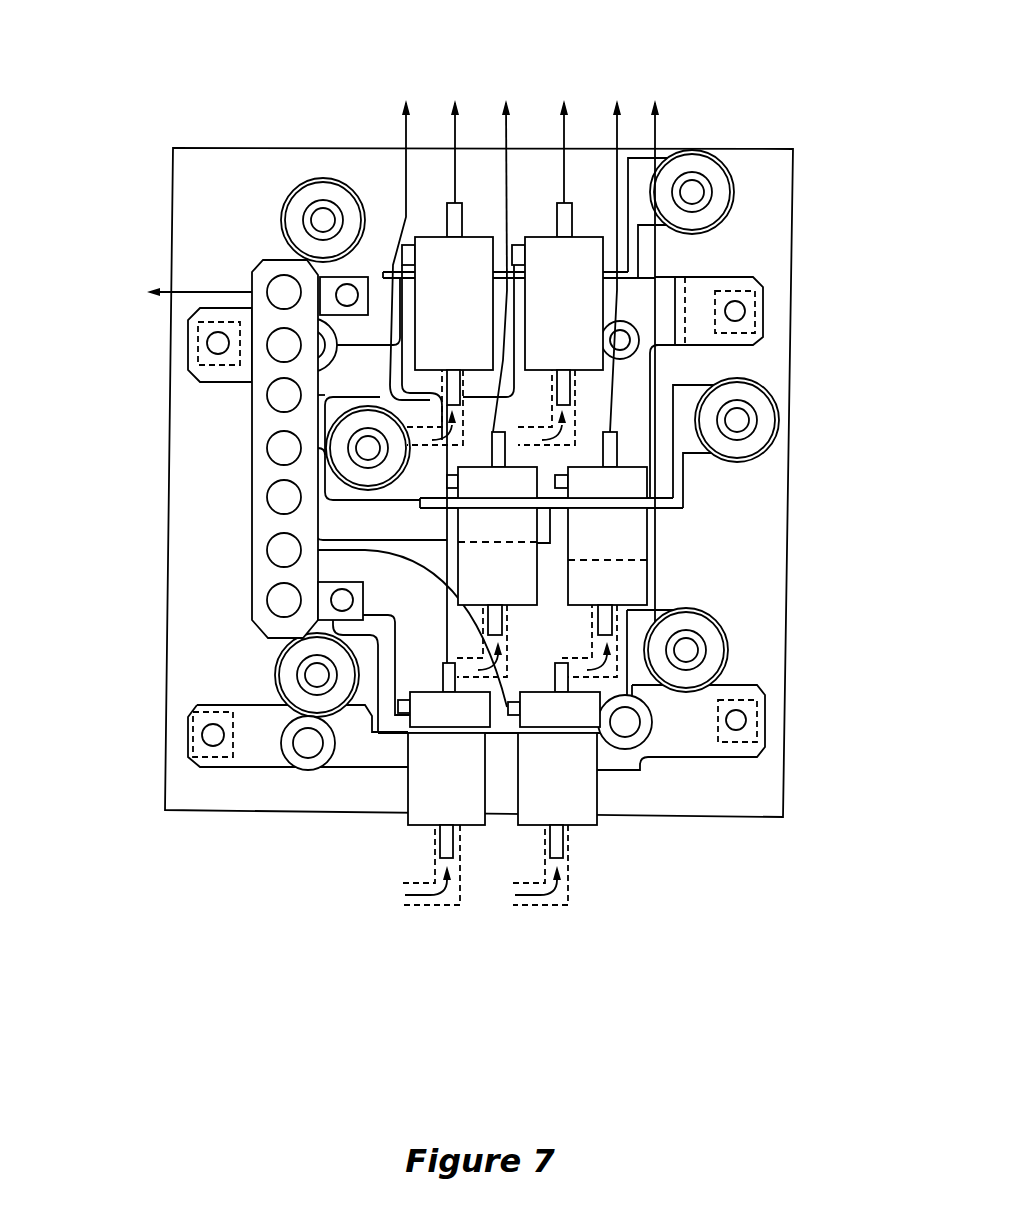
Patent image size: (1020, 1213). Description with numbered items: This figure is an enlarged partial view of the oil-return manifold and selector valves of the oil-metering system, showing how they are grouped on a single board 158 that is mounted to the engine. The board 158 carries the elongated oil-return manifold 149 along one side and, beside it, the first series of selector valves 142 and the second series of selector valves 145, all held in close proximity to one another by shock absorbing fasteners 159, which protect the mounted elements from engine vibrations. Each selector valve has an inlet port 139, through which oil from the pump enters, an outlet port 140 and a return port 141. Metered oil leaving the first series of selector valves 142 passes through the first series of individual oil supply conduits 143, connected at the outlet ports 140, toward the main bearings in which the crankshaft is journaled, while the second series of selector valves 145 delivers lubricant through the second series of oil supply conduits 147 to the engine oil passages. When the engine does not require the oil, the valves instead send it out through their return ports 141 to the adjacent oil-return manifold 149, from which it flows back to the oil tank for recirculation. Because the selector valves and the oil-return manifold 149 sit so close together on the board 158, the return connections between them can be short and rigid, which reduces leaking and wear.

The inlet port 139 is at (567, 842).
The outlet port 140 is at (553, 690).
The return port 141 is at (517, 714).
The first series of selector valves 142 is at (470, 572).
The first series of individual oil supply conduits 143 is at (403, 128).
The second series of selector valves 145 is at (633, 528).
The second series of oil supply conduits 147 is at (497, 128).
The oil-return manifold 149 is at (198, 490).
The board 158 is at (173, 217).
The shock absorbing fasteners 159 is at (288, 663).